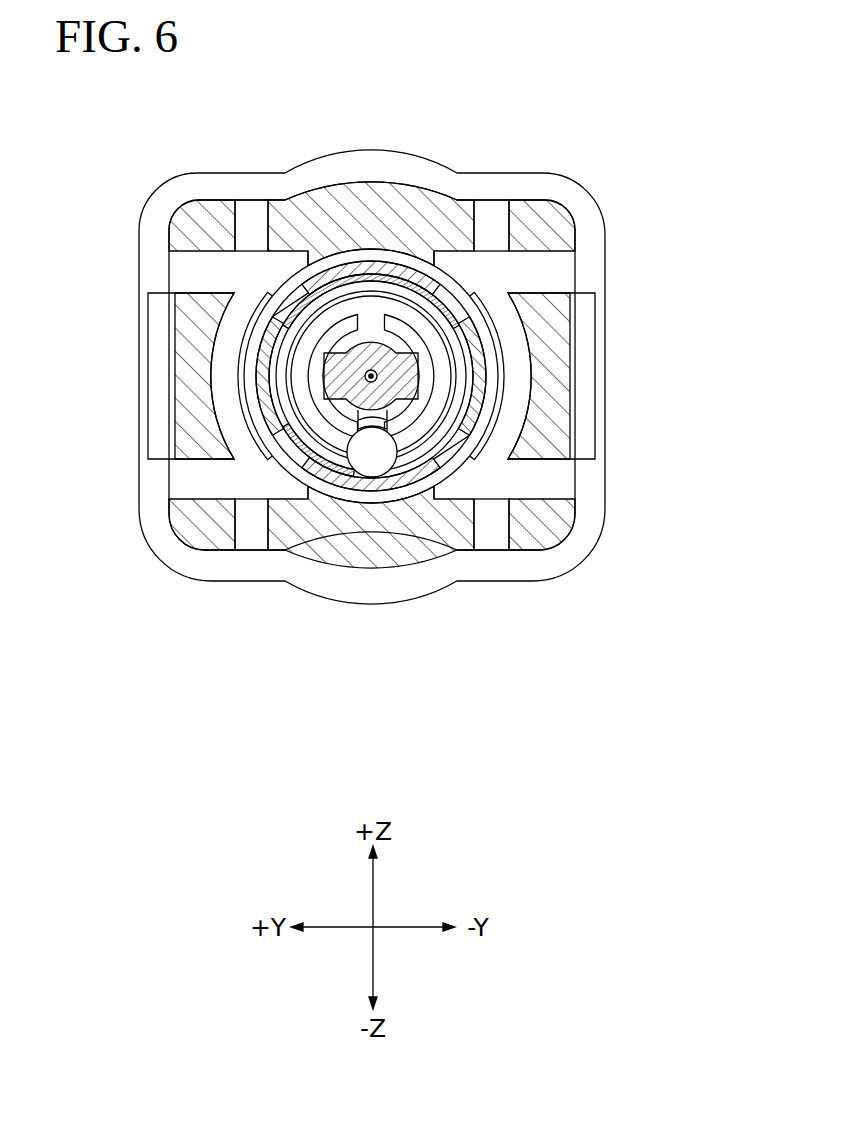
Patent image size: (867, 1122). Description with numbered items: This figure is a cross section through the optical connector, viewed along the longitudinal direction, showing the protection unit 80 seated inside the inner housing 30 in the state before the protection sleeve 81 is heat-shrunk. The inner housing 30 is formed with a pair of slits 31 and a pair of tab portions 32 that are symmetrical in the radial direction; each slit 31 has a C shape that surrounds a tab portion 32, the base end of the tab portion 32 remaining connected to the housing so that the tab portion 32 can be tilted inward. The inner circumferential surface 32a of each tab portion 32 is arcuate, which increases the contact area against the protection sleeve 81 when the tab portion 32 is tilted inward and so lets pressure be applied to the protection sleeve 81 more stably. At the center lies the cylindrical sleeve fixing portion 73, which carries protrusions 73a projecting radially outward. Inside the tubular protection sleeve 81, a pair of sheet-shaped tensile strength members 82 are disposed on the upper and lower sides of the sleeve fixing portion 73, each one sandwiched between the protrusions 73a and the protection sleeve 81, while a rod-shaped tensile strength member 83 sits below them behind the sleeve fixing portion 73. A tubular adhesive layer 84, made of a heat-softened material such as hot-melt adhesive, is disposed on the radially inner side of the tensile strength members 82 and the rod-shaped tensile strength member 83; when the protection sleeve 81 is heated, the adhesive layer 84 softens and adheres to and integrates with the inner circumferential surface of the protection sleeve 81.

The inner housing 30 is at (193, 170).
The slit 31 is at (244, 222).
The tab portion 32 is at (324, 214).
The inner circumferential surface 32a is at (388, 252).
The protection unit 80 is at (449, 258).
The tensile strength member 82 is at (434, 300).
The protection sleeve 81 is at (414, 484).
The adhesive layer 84 is at (458, 410).
The protrusion 73a is at (410, 344).
The sleeve fixing portion 73 is at (394, 379).
The rod-shaped tensile strength member 83 is at (372, 458).